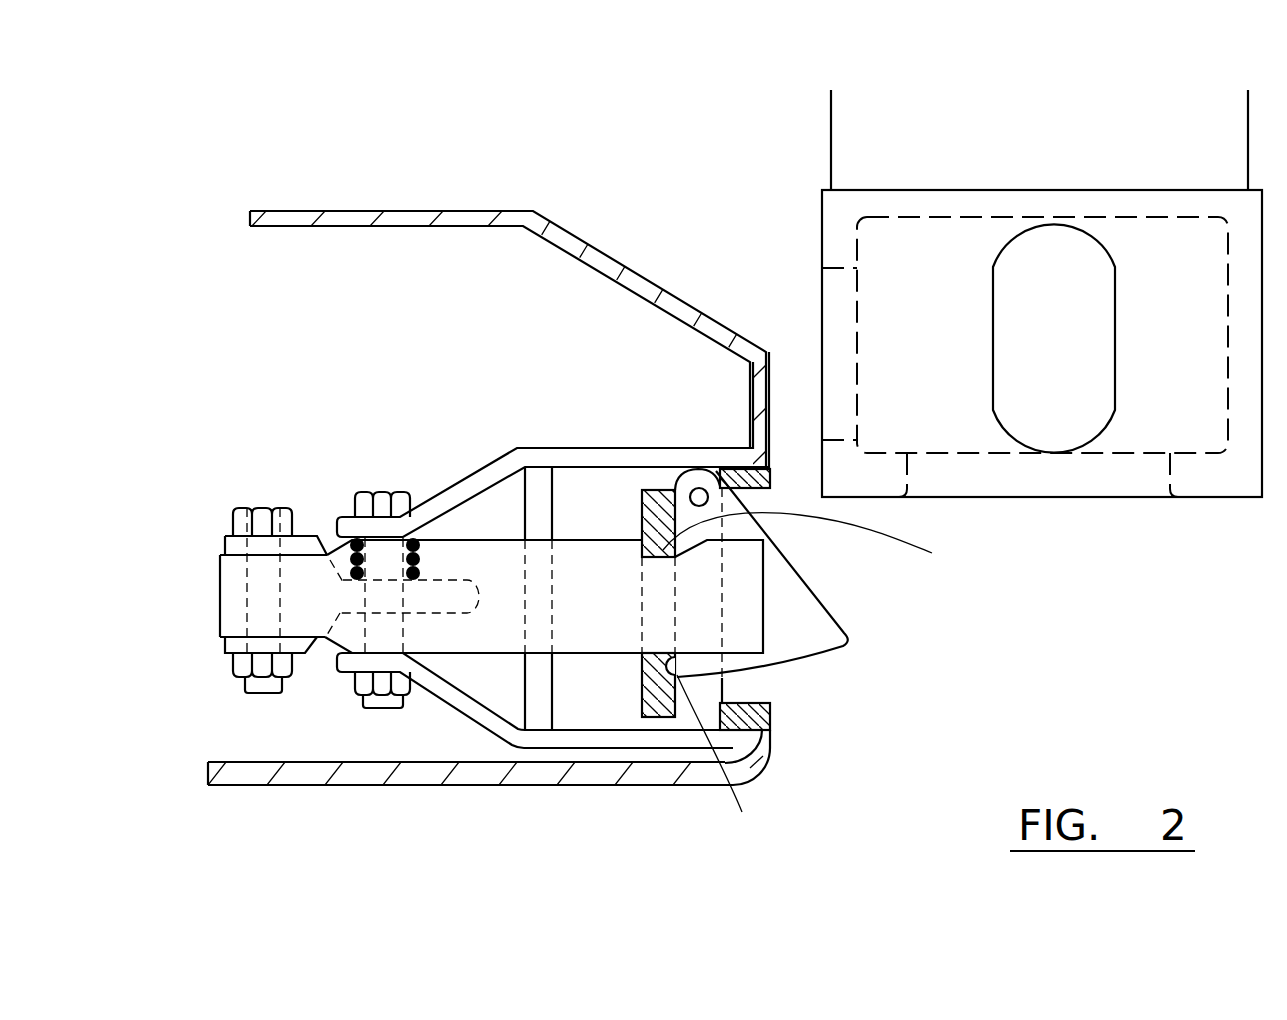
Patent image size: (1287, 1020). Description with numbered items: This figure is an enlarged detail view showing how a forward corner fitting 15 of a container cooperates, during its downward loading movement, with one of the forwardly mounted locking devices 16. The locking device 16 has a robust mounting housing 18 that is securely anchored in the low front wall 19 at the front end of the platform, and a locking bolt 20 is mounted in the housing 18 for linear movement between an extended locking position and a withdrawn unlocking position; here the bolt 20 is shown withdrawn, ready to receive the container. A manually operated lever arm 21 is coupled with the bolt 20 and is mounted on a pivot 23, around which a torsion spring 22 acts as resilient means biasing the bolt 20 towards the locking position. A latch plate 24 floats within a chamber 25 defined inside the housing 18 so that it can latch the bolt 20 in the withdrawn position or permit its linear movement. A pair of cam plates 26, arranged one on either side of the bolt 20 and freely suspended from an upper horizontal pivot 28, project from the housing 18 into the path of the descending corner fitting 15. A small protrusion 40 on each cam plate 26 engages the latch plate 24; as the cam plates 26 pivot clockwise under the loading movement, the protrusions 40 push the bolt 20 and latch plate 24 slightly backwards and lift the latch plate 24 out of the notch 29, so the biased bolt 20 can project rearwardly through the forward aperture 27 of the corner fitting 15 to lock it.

The corner fitting 15 is at (1145, 195).
The locking device 16 is at (528, 433).
The mounting housing 18 is at (468, 483).
The low front wall 19 is at (830, 307).
The locking bolt 20 is at (477, 637).
The lever arm 21 is at (443, 590).
The torsion spring 22 is at (350, 545).
The pivot 23 is at (372, 628).
The latch plate 24 is at (657, 505).
The chamber 25 is at (569, 598).
The cam plate 26 is at (790, 627).
The forward aperture 27 is at (763, 410).
The upper horizontal pivot 28 is at (695, 488).
The notch 29 is at (814, 542).
The protrusion 40 is at (737, 763).